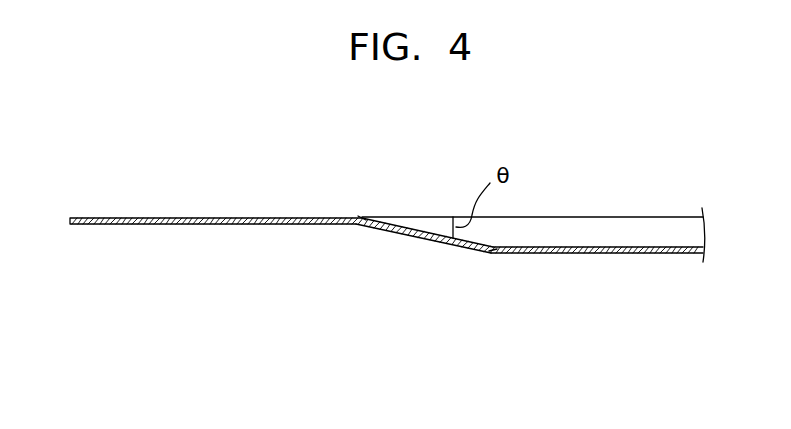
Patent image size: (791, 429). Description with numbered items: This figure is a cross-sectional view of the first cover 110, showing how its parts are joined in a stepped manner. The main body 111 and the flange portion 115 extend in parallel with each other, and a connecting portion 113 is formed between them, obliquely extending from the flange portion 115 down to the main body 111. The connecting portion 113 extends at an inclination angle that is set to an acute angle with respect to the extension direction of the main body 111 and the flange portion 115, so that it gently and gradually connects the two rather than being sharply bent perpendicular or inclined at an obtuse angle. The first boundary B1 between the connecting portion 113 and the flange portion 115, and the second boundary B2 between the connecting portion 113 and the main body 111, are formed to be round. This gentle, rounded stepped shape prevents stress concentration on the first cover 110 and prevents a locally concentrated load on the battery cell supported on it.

The first cover 110 is at (387, 303).
The main body 111 is at (597, 303).
The connecting portion 113 is at (432, 243).
The flange portion 115 is at (297, 225).
The first boundary B1 is at (359, 217).
The second boundary B2 is at (490, 254).